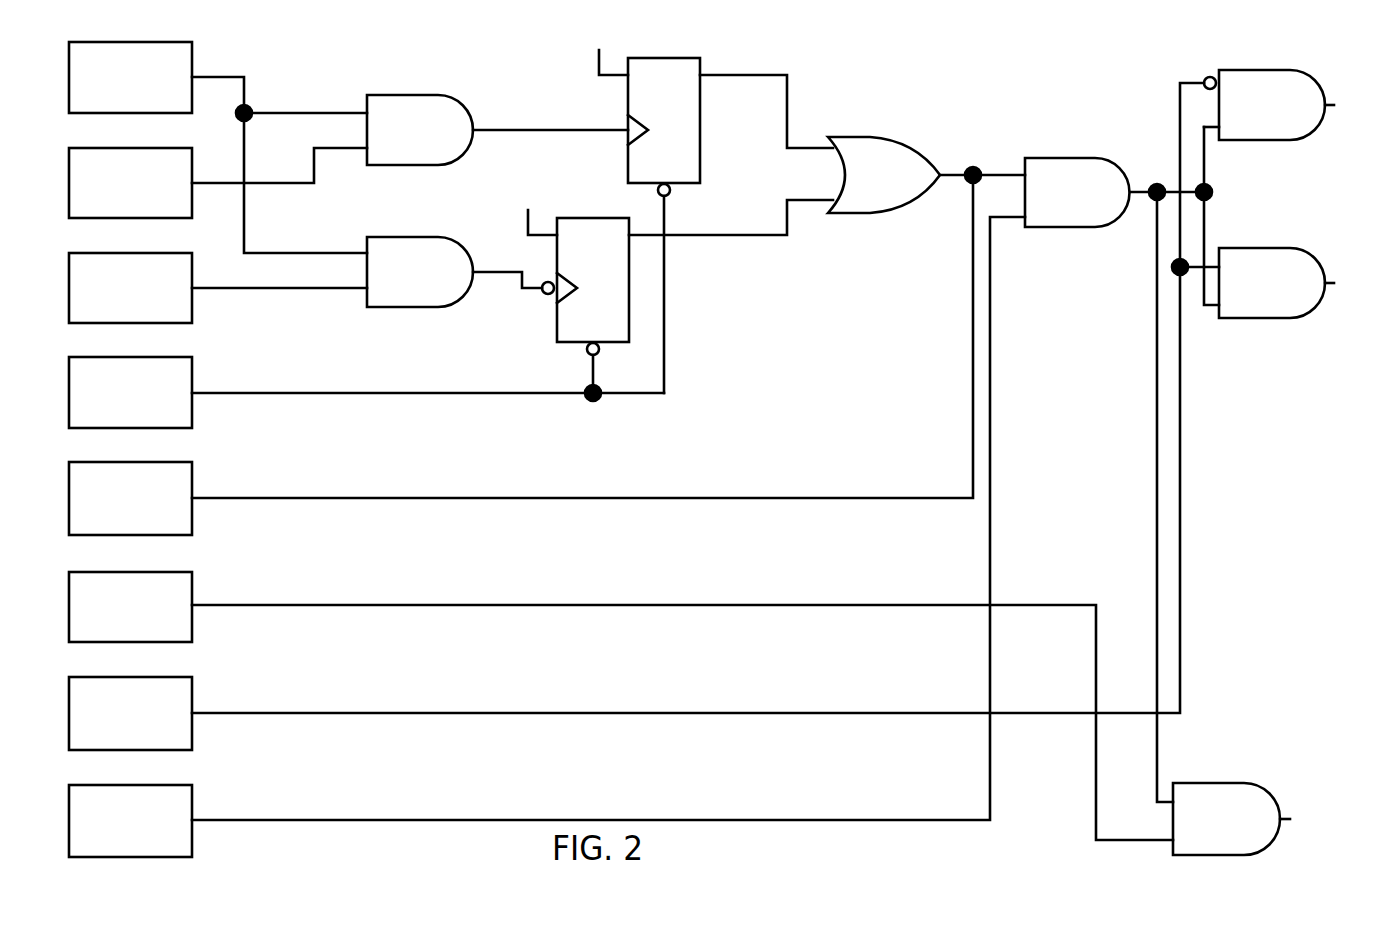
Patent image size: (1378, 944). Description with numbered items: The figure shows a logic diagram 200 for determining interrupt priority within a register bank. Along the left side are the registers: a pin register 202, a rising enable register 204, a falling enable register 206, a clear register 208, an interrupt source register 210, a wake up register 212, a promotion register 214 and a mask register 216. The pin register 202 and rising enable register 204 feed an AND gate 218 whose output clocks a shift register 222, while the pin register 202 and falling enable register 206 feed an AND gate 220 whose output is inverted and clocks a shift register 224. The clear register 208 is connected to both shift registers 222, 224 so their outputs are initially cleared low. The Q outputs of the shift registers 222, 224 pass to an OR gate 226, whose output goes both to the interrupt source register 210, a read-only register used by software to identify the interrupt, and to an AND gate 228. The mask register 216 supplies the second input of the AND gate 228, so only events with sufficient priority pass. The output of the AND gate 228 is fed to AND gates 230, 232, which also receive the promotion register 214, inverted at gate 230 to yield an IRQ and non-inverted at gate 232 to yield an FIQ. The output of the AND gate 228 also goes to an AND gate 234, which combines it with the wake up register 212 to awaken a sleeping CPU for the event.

The logic diagram 200 is at (1032, 60).
The pin register 202 is at (207, 42).
The rising enable register 204 is at (207, 148).
The falling enable register 206 is at (207, 253).
The clear register 208 is at (207, 357).
The interrupt source register 210 is at (207, 462).
The wake up register 212 is at (207, 572).
The promotion register 214 is at (207, 677).
The mask register 216 is at (207, 785).
The AND gate 218 is at (408, 94).
The AND gate 220 is at (402, 237).
The shift register 222 is at (701, 127).
The shift register 224 is at (598, 194).
The OR gate 226 is at (870, 137).
The AND gate 228 is at (1066, 156).
The AND gate 230 is at (1273, 142).
The AND gate 232 is at (1275, 247).
The AND gate 234 is at (1226, 783).